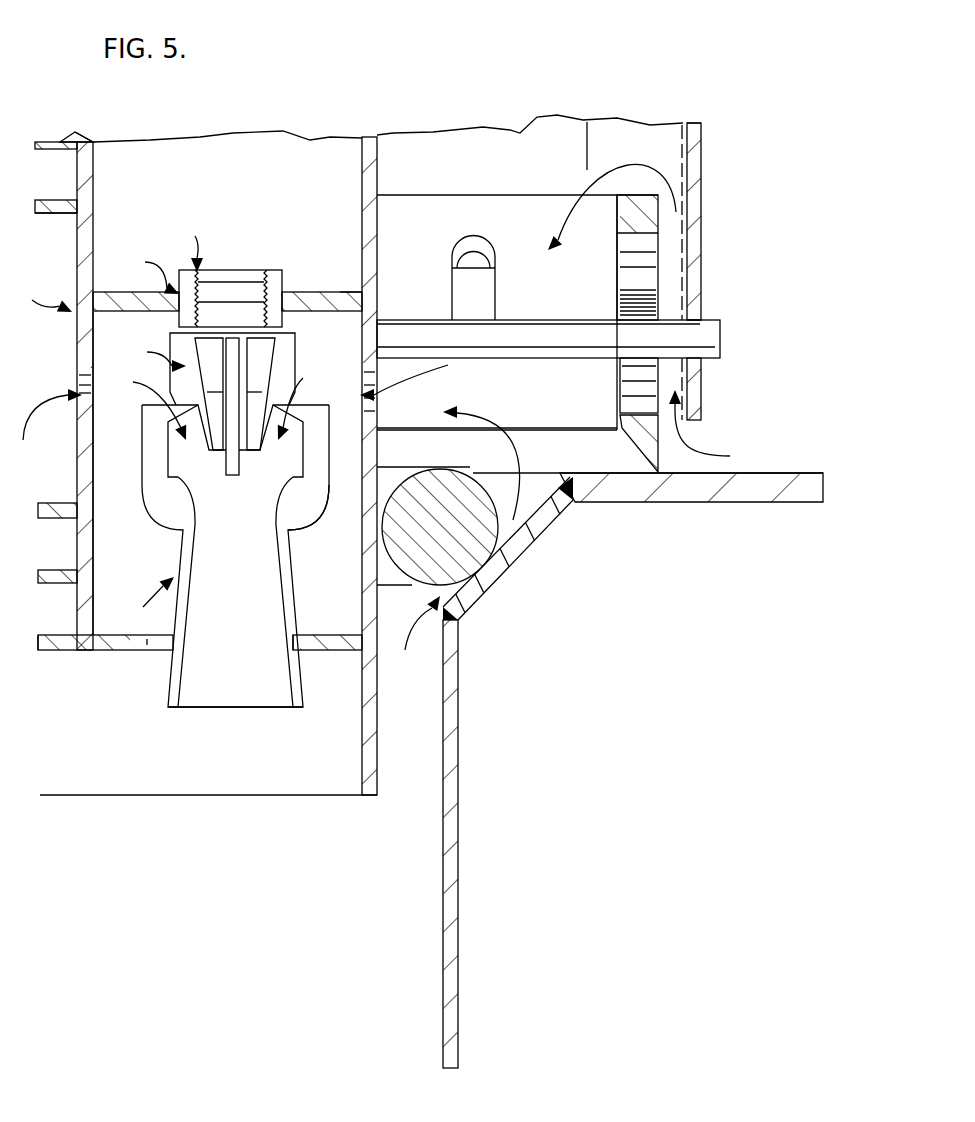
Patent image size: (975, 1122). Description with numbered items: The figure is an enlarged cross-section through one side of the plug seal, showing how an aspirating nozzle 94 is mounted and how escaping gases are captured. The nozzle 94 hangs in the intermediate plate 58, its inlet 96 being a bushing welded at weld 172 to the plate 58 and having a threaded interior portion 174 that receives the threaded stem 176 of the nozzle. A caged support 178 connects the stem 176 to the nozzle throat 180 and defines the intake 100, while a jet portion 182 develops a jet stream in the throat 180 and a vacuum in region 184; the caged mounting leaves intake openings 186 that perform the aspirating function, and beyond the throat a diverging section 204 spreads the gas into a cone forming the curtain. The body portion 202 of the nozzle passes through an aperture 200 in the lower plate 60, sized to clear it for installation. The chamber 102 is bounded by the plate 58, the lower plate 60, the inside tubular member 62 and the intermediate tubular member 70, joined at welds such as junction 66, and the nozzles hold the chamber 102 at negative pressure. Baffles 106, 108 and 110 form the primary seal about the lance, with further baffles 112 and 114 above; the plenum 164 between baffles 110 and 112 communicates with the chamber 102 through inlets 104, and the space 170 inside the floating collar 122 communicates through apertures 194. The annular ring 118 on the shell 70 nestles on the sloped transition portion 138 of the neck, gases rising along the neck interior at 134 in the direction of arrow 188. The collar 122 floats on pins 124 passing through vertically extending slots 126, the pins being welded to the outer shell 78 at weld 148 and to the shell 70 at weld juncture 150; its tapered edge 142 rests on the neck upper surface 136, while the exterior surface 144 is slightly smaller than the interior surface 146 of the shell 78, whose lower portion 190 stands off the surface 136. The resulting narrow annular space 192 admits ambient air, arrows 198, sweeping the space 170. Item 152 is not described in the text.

The intermediate plate 58 is at (300, 294).
The lower plate 60 is at (112, 643).
The inside tubular member 62 is at (90, 200).
The junction 66 is at (366, 290).
The intermediate tubular member 70 is at (375, 135).
The outer shell 78 is at (700, 160).
The nozzle 94 is at (224, 495).
The inlet 96 is at (204, 270).
The intake 100 is at (385, 385).
The chamber 102 is at (146, 570).
The inlets 104 is at (82, 420).
The baffle 106 is at (58, 637).
The baffle 108 is at (58, 572).
The baffle 110 is at (56, 505).
The baffle 112 is at (55, 200).
The baffle 114 is at (40, 144).
The annular ring 118 is at (483, 538).
The floating collar 122 is at (507, 210).
The pins 124 is at (548, 335).
The vertically extending slots 126 is at (650, 283).
The interior of the neck 134 is at (458, 878).
The neck upper surface 136 is at (783, 474).
The transition portion 138 is at (533, 503).
The tapered edge 142 is at (672, 475).
The exterior surface 144 is at (676, 205).
The interior surface 146 is at (683, 128).
The weld 148 is at (700, 320).
The weld juncture 150 is at (377, 321).
The gap 152 is at (36, 214).
The plenum 164 is at (40, 292).
The space 170 is at (571, 416).
The weld 172 is at (293, 300).
The threaded interior portion 174 is at (162, 284).
The threaded stem 176 is at (268, 290).
The caged support 178 is at (165, 394).
The nozzle throat 180 is at (263, 523).
The jet portion 182 is at (255, 350).
The region 184 is at (182, 450).
The intake openings 186 is at (293, 260).
The arrow 188 is at (460, 672).
The lower portion 190 is at (694, 418).
The narrow annular space 192 is at (676, 238).
The apertures 194 is at (375, 416).
The arrows 198 is at (730, 456).
The apertures 200 is at (313, 640).
The body portion 202 is at (289, 532).
The diverging section 204 is at (178, 645).